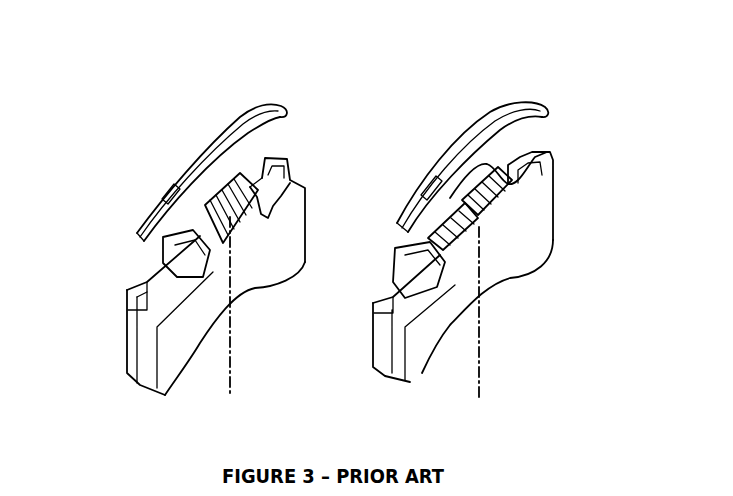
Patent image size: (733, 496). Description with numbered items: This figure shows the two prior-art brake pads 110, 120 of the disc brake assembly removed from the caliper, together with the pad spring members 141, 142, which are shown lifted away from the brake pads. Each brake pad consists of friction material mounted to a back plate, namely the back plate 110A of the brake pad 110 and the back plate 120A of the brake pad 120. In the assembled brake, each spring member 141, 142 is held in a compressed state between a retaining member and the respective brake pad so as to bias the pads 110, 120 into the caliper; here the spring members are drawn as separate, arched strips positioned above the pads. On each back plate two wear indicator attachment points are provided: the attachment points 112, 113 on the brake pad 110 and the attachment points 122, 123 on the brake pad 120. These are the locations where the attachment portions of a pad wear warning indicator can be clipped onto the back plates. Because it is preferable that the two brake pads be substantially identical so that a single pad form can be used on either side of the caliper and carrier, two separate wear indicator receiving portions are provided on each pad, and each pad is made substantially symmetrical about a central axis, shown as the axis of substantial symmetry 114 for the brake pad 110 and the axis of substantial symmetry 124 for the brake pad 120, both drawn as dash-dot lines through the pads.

The brake pad 110 is at (112, 352).
The back plate 110A is at (127, 306).
The wear indicator attachment point 112 is at (143, 283).
The wear indicator attachment point 113 is at (233, 196).
The axis of substantial symmetry 114 is at (230, 343).
The spring member 142 is at (200, 157).
The brake pad 120 is at (449, 378).
The back plate 120A is at (420, 352).
The wear indicator attachment point 122 is at (455, 255).
The wear indicator attachment point 123 is at (508, 204).
The axis of substantial symmetry 124 is at (479, 372).
The spring member 141 is at (488, 120).